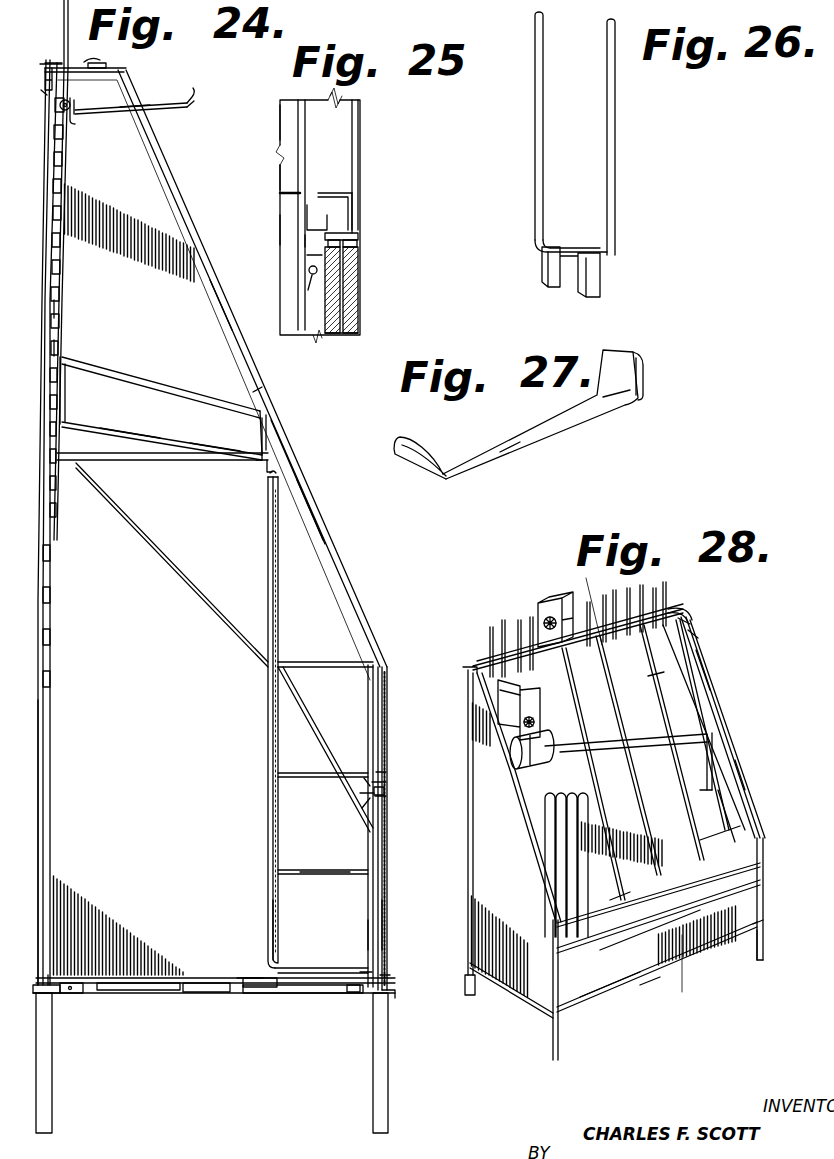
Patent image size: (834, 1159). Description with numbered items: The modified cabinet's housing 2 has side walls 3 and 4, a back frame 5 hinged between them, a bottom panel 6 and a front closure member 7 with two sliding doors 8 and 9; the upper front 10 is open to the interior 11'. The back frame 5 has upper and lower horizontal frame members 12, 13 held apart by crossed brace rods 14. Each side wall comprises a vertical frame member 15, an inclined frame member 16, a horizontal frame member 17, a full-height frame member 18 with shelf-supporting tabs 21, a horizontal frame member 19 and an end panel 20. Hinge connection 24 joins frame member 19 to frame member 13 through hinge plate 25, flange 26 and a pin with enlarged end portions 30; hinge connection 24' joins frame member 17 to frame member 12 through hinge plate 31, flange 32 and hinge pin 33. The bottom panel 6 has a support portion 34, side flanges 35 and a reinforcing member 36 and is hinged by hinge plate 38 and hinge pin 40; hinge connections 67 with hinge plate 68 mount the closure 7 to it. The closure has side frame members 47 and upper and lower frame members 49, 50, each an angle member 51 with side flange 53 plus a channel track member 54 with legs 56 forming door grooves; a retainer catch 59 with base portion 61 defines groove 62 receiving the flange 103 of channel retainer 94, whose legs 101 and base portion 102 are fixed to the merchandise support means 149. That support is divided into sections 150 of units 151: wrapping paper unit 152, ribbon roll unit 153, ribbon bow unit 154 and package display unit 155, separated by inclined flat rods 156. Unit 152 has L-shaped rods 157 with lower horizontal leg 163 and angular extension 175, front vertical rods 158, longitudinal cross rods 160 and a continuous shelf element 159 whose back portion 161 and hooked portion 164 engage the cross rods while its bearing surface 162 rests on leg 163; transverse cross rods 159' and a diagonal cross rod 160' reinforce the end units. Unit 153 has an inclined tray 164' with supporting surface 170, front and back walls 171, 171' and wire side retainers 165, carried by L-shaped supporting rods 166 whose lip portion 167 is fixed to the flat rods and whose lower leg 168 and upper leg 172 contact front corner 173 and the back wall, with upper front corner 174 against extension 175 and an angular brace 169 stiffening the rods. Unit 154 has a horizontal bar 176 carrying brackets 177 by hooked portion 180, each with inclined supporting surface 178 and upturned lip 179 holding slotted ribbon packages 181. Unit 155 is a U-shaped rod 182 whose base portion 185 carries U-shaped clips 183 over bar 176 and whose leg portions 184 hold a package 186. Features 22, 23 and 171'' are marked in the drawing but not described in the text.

In FIG. 24, the housing 2 is at (296, 460).
In FIG. 25, the housing 2 is at (282, 121).
In FIG. 28, the housing 2 is at (706, 676).
In FIG. 24, the side wall 3 is at (304, 530).
In FIG. 25, the side wall 3 is at (282, 172).
In FIG. 28, the side wall 3 is at (698, 660).
In FIG. 28, the side wall 4 is at (468, 843).
In FIG. 24, the back frame 5 is at (42, 264).
In FIG. 28, the back frame 5 is at (468, 710).
In FIG. 24, the bottom panel 6 is at (252, 976).
In FIG. 24, the front closure member 7 is at (387, 963).
In FIG. 25, the front closure member 7 is at (346, 322).
In FIG. 28, the front closure member 7 is at (665, 950).
In FIG. 24, the sliding door 8 is at (386, 891).
In FIG. 25, the sliding door 8 is at (355, 272).
In FIG. 28, the sliding door 8 is at (720, 944).
In FIG. 24, the sliding door 9 is at (371, 936).
In FIG. 25, the sliding door 9 is at (333, 308).
In FIG. 28, the sliding door 9 is at (584, 995).
In FIG. 24, the front of housing 10 is at (388, 698).
In FIG. 28, the front of housing 10 is at (764, 842).
In FIG. 28, the interior of housing 11' is at (735, 770).
In FIG. 24, the upper horizontal frame member 12 is at (46, 79).
In FIG. 28, the upper horizontal frame member 12 is at (491, 652).
In FIG. 24, the lower horizontal frame member 13 is at (36, 988).
In FIG. 24, the brace rods 14 is at (46, 485).
In FIG. 24, the frame member 15 is at (388, 925).
In FIG. 25, the frame member 15 is at (330, 96).
In FIG. 28, the frame member 15 is at (764, 896).
In FIG. 24, the frame member 16 is at (326, 558).
In FIG. 28, the frame member 16 is at (722, 720).
In FIG. 24, the frame member 17 is at (126, 70).
In FIG. 28, the frame member 17 is at (680, 610).
In FIG. 24, the frame member 18 is at (44, 742).
In FIG. 28, the frame member 18 is at (465, 990).
In FIG. 28, the frame member 19 is at (508, 992).
In FIG. 24, the end panel 20 is at (218, 312).
In FIG. 25, the end panel 20 is at (282, 228).
In FIG. 28, the end panel 20 is at (740, 812).
In FIG. 24, the tabs 21 is at (52, 690).
In FIG. 24, the rear leg 22 is at (49, 1090).
In FIG. 24, the front leg 23 is at (389, 1090).
In FIG. 28, the front leg 23 is at (764, 948).
In FIG. 28, the hinge connection 24 is at (644, 783).
In FIG. 24, the hinge connection 24' is at (91, 48).
In FIG. 28, the hinge connection 24' is at (559, 642).
In FIG. 24, the hinge plate 25 is at (100, 996).
In FIG. 24, the flange 26 is at (50, 976).
In FIG. 24, the enlarged end portions 30 is at (82, 980).
In FIG. 24, the hinge plate 31 is at (70, 61).
In FIG. 24, the flange 32 is at (42, 64).
In FIG. 24, the hinge pin 33 is at (102, 63).
In FIG. 24, the support portion 34 is at (212, 976).
In FIG. 24, the side flanges 35 is at (148, 992).
In FIG. 24, the reinforcing member 36 is at (222, 996).
In FIG. 24, the hinge plate 38 is at (50, 996).
In FIG. 24, the hinge pin 40 is at (70, 996).
In FIG. 25, the side frame member 47 is at (320, 338).
In FIG. 24, the upper frame member 49 is at (386, 792).
In FIG. 25, the upper frame member 49 is at (360, 236).
In FIG. 24, the lower frame member 50 is at (389, 990).
In FIG. 28, the lower frame member 50 is at (764, 922).
In FIG. 25, the angle member 51 is at (338, 232).
In FIG. 24, the side flange 53 is at (386, 800).
In FIG. 25, the track member 54 is at (358, 242).
In FIG. 28, the track member 54 is at (612, 922).
In FIG. 25, the legs 56 is at (358, 250).
In FIG. 24, the retainer catch 59 is at (370, 797).
In FIG. 25, the retainer catch 59 is at (308, 259).
In FIG. 24, the base portion 61 is at (369, 806).
In FIG. 25, the base portion 61 is at (310, 290).
In FIG. 24, the groove 62 is at (369, 775).
In FIG. 25, the groove 62 is at (306, 236).
In FIG. 24, the hinge connections 67 is at (346, 994).
In FIG. 24, the hinge plate 68 is at (366, 972).
In FIG. 24, the retainer device 94 is at (387, 783).
In FIG. 25, the retainer device 94 is at (360, 210).
In FIG. 24, the legs 101 is at (384, 770).
In FIG. 25, the legs 101 is at (336, 193).
In FIG. 25, the base portion 102 is at (360, 195).
In FIG. 25, the flange 103 is at (310, 270).
In FIG. 28, the merchandise support means 149 is at (736, 738).
In FIG. 28, the storage and display sections 150 is at (605, 930).
In FIG. 28, the storage and display units 151 is at (706, 700).
In FIG. 24, the wrapping paper roll storage and display unit 152 is at (296, 752).
In FIG. 28, the wrapping paper roll storage and display unit 152 is at (548, 880).
In FIG. 24, the ribbon roll unit 153 is at (130, 424).
In FIG. 28, the ribbon roll unit 153 is at (522, 788).
In FIG. 28, the ribbon bow unit 154 is at (500, 712).
In FIG. 24, the finished package display unit 155 is at (64, 40).
In FIG. 28, the finished package display unit 155 is at (503, 623).
In FIG. 24, the inclined flat rods 156 is at (300, 491).
In FIG. 25, the inclined flat rods 156 is at (359, 143).
In FIG. 28, the inclined flat rods 156 is at (612, 904).
In FIG. 24, the vertical L-shaped rods 157 is at (269, 826).
In FIG. 24, the front vertical rods 158 is at (374, 845).
In FIG. 25, the front vertical rods 158 is at (306, 128).
In FIG. 24, the shelf element 159 is at (293, 930).
In FIG. 24, the transverse cross rods 159' is at (325, 885).
In FIG. 25, the transverse cross rods 159' is at (271, 192).
In FIG. 28, the transverse cross rods 159' is at (682, 887).
In FIG. 24, the longitudinal cross rods 160 is at (323, 860).
In FIG. 24, the diagonal cross rod 160' is at (325, 749).
In FIG. 28, the diagonal cross rod 160' is at (751, 811).
In FIG. 24, the back portion 161 is at (278, 796).
In FIG. 28, the back portion 161 is at (531, 822).
In FIG. 24, the merchandise bearing surface 162 is at (324, 970).
In FIG. 24, the lower horizontal leg 163 is at (298, 992).
In FIG. 24, the hooked portion 164 is at (252, 488).
In FIG. 24, the ribbon roll tray 164' is at (215, 437).
In FIG. 24, the wire side retainer 165 is at (174, 390).
In FIG. 24, the L-shaped supporting rods 166 is at (56, 310).
In FIG. 28, the L-shaped supporting rods 166 is at (656, 680).
In FIG. 24, the lip portion 167 is at (46, 96).
In FIG. 24, the lower leg 168 is at (172, 468).
In FIG. 24, the angular brace 169 is at (176, 566).
In FIG. 24, the merchandise supporting surface 170 is at (156, 434).
In FIG. 28, the merchandise supporting surface 170 is at (606, 784).
In FIG. 24, the front wall 171 is at (286, 439).
In FIG. 28, the back wall 171' is at (686, 761).
In FIG. 24, the tray rear wall 171'' is at (88, 390).
In FIG. 24, the upper leg 172 is at (58, 348).
In FIG. 24, the front corner 173 is at (260, 472).
In FIG. 24, the upper front corner 174 is at (264, 414).
In FIG. 24, the angular extension 175 is at (264, 385).
In FIG. 24, the horizontal bar 176 is at (70, 105).
In FIG. 28, the horizontal bar 176 is at (614, 604).
In FIG. 24, the merchandise bracket 177 is at (189, 106).
In FIG. 27, the merchandise bracket 177 is at (580, 430).
In FIG. 28, the merchandise bracket 177 is at (688, 623).
In FIG. 24, the merchandise supporting surface 178 is at (142, 108).
In FIG. 27, the merchandise supporting surface 178 is at (510, 460).
In FIG. 24, the upturned lip 179 is at (190, 97).
In FIG. 27, the upturned lip 179 is at (430, 475).
In FIG. 28, the upturned lip 179 is at (700, 638).
In FIG. 24, the hooked portion 180 is at (75, 124).
In FIG. 27, the hooked portion 180 is at (643, 366).
In FIG. 28, the ribbon packages 181 is at (512, 736).
In FIG. 26, the U-shaped rod 182 is at (616, 199).
In FIG. 26, the U-shaped clips 183 is at (602, 284).
In FIG. 26, the leg portions 184 is at (616, 126).
In FIG. 26, the base portion 185 is at (564, 250).
In FIG. 28, the package 186 is at (540, 600).